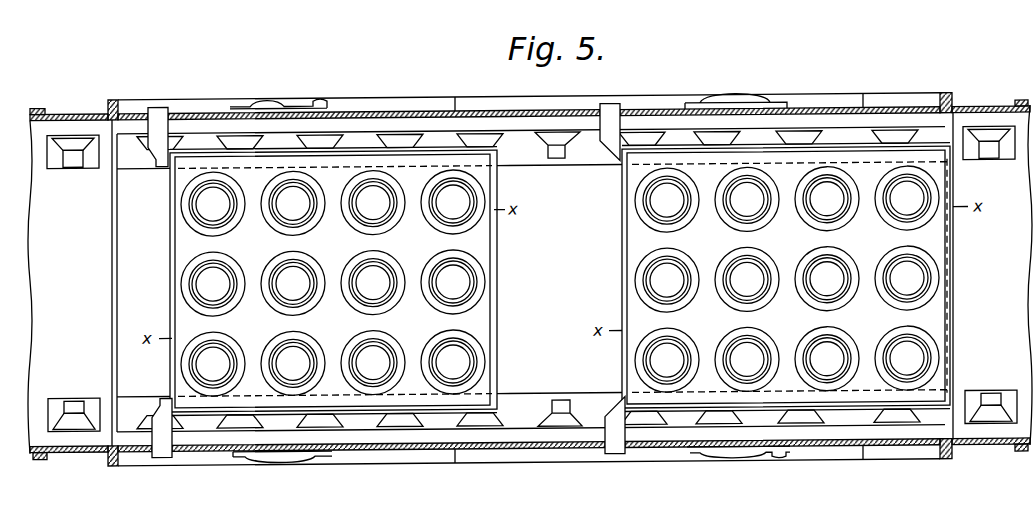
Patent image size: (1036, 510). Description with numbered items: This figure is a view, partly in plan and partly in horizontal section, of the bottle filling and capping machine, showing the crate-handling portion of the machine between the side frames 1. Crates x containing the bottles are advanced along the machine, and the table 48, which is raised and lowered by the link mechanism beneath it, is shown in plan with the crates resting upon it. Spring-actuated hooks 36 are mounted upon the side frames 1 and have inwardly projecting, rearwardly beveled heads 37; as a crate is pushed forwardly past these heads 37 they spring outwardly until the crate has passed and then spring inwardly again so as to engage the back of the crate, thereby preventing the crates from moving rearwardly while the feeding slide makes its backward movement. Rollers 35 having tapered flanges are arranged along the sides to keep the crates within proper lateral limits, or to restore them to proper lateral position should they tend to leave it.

The side frame 1 is at (837, 452).
The roller 35 is at (997, 398).
The spring-actuated hook 36 is at (219, 459).
The beveled head 37 is at (154, 416).
The table 48 is at (369, 281).